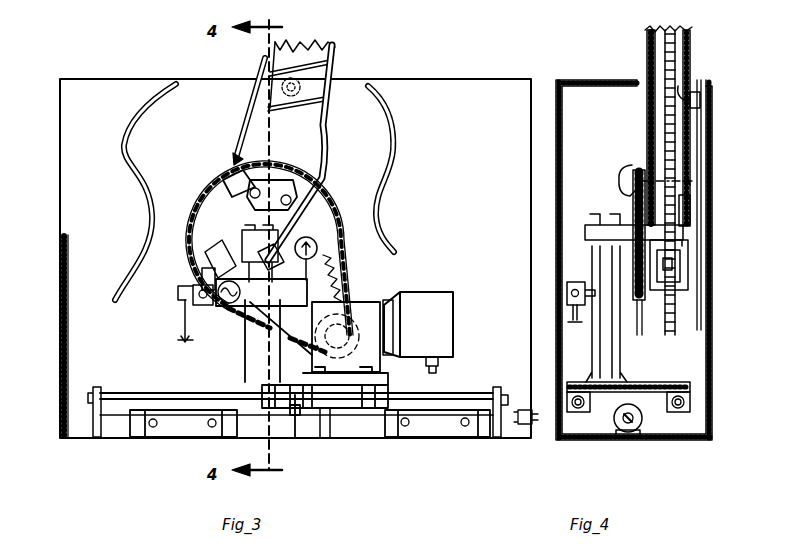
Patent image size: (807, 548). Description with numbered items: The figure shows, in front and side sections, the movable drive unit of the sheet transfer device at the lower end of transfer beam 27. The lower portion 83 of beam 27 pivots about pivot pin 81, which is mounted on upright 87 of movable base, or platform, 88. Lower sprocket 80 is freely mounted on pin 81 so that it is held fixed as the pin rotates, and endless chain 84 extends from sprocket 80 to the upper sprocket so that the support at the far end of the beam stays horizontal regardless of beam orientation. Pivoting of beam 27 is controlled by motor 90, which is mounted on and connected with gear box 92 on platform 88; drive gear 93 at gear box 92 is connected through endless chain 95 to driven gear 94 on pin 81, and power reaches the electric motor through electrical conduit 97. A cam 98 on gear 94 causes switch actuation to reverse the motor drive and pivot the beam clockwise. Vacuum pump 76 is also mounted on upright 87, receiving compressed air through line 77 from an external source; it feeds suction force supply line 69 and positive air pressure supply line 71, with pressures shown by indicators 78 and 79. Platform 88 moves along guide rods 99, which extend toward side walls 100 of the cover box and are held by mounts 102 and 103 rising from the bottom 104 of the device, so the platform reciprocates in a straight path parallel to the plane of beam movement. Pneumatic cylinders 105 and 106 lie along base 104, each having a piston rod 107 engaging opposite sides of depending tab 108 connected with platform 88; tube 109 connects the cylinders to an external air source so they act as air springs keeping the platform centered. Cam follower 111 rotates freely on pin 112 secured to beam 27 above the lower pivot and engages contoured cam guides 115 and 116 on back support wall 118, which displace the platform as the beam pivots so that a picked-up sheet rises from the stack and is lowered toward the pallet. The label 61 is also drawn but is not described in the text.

In FIG. 3, the transfer beam 27 is at (295, 46).
In FIG. 4, the transfer beam 27 is at (688, 48).
In FIG. 4, the drive chain 61 is at (571, 7).
In FIG. 3, the suction force supply line 69 is at (338, 42).
In FIG. 3, the air pressure supply line 71 is at (250, 132).
In FIG. 3, the vacuum pump 76 is at (262, 268).
In FIG. 4, the vacuum pump 76 is at (568, 290).
In FIG. 3, the line 77 is at (180, 338).
In FIG. 4, the line 77 is at (580, 314).
In FIG. 3, the indicator 78 is at (188, 302).
In FIG. 3, the indicator 79 is at (318, 250).
In FIG. 4, the lower sprocket 80 is at (678, 256).
In FIG. 4, the pivot pin 81 is at (612, 232).
In FIG. 3, the lower portion of beam 83 is at (296, 133).
In FIG. 4, the lower portion of beam 83 is at (688, 210).
In FIG. 4, the endless chain 84 is at (656, 50).
In FIG. 3, the upright 87 is at (245, 346).
In FIG. 4, the upright 87 is at (590, 345).
In FIG. 3, the movable base, or platform 88 is at (346, 392).
In FIG. 4, the movable base, or platform 88 is at (668, 382).
In FIG. 3, the motor 90 is at (416, 300).
In FIG. 3, the gear box 92 is at (344, 318).
In FIG. 3, the drive gear 93 is at (300, 346).
In FIG. 3, the driven gear 94 is at (225, 180).
In FIG. 4, the driven gear 94 is at (640, 168).
In FIG. 3, the endless chain 95 is at (326, 226).
In FIG. 4, the endless chain 95 is at (641, 292).
In FIG. 3, the electrical conduit 97 is at (434, 360).
In FIG. 3, the cam 98 is at (232, 250).
In FIG. 3, the guide rods 99 is at (470, 397).
In FIG. 4, the guide rods 99 is at (690, 402).
In FIG. 3, the side walls 100 is at (60, 183).
In FIG. 3, the mount 102 is at (96, 425).
In FIG. 3, the mount 103 is at (480, 437).
In FIG. 3, the bottom 104 is at (418, 425).
In FIG. 4, the bottom 104 is at (606, 440).
In FIG. 3, the pneumatic cylinder 105 is at (165, 428).
In FIG. 4, the pneumatic cylinder 105 is at (632, 442).
In FIG. 3, the pneumatic cylinder 106 is at (452, 428).
In FIG. 3, the piston rod 107 is at (294, 420).
In FIG. 4, the piston rod 107 is at (640, 425).
In FIG. 3, the depending tab 108 is at (300, 398).
In FIG. 3, the tube 109 is at (212, 428).
In FIG. 3, the cam follower 111 is at (262, 76).
In FIG. 4, the cam follower 111 is at (702, 99).
In FIG. 3, the pin 112 is at (338, 62).
In FIG. 4, the pin 112 is at (684, 92).
In FIG. 3, the cam guide 115 is at (128, 145).
In FIG. 4, the cam guide 115 is at (697, 137).
In FIG. 3, the cam guide 116 is at (385, 135).
In FIG. 3, the back support wall 118 is at (474, 78).